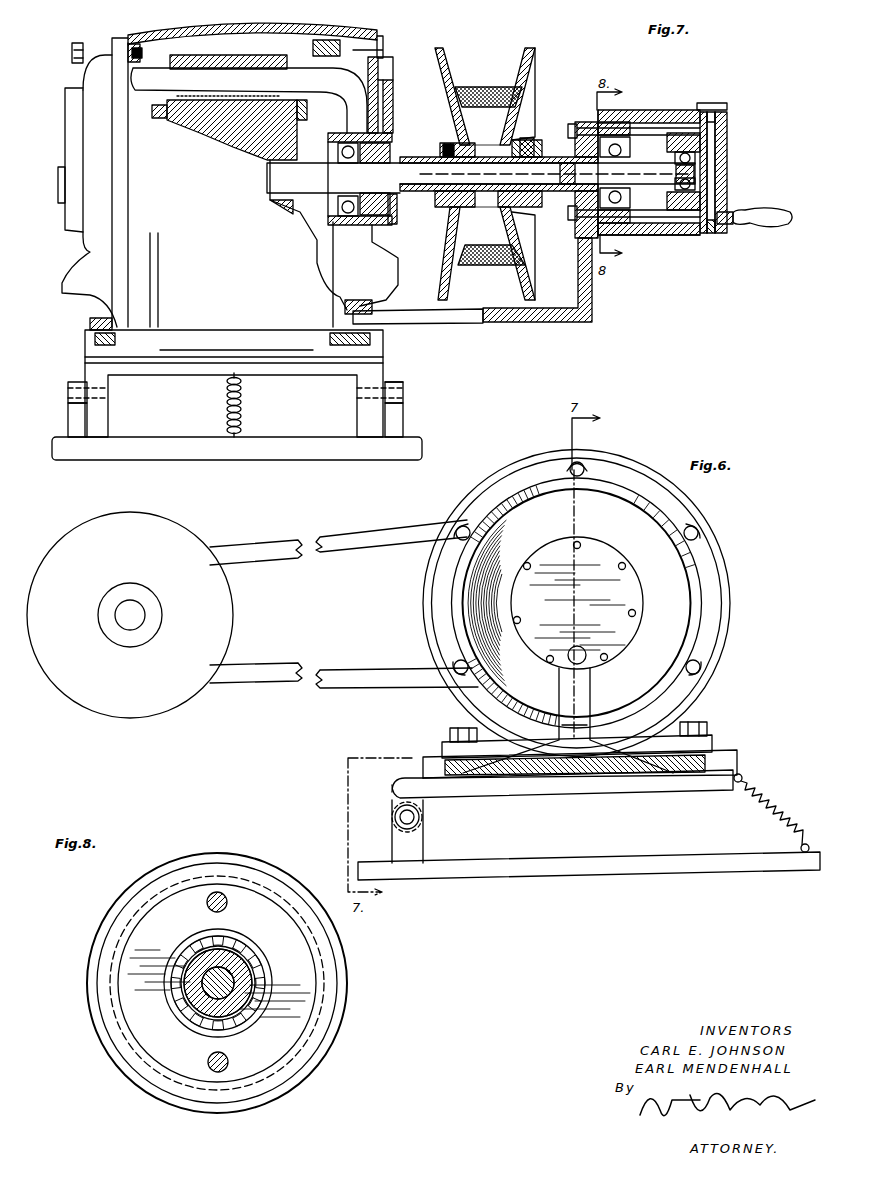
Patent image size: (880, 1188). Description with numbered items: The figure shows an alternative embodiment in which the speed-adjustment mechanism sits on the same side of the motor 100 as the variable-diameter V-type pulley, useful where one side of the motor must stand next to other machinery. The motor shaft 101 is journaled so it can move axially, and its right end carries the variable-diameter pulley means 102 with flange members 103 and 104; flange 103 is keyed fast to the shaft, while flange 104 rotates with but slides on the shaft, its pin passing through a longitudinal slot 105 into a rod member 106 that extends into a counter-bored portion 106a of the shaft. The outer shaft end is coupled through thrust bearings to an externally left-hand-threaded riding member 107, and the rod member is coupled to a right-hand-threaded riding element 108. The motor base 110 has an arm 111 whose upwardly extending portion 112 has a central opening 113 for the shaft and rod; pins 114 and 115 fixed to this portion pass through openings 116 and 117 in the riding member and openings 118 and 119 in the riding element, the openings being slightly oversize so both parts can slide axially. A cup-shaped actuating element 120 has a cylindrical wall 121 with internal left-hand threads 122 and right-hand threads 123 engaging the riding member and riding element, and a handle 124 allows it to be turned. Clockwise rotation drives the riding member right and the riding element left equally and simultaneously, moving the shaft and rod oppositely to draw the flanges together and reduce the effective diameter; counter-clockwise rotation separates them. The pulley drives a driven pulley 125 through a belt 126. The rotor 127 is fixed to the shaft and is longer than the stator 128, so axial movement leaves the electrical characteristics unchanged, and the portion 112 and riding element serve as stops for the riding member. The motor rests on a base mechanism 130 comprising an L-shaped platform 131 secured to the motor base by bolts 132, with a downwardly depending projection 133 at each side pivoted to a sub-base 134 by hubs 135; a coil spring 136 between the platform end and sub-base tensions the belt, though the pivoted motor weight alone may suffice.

In FIG. 7, the motor 100 is at (262, 27).
In FIG. 6, the motor 100 is at (635, 468).
In FIG. 7, the motor shaft 101 is at (287, 180).
In FIG. 7, the variable-diameter pulley means 102 is at (506, 54).
In FIG. 6, the variable-diameter pulley means 102 is at (703, 572).
In FIG. 7, the flange member 103 is at (444, 60).
In FIG. 7, the flange member 104 is at (533, 60).
In FIG. 6, the flange member 104 is at (690, 607).
In FIG. 7, the longitudinal slot 105 is at (537, 140).
In FIG. 7, the rod member 106 is at (452, 207).
In FIG. 8, the rod member 106 is at (180, 1000).
In FIG. 7, the counter-bored portion 106a is at (422, 157).
In FIG. 7, the riding member 107 is at (620, 108).
In FIG. 8, the riding member 107 is at (148, 948).
In FIG. 7, the riding element 108 is at (722, 127).
In FIG. 7, the base 110 is at (85, 350).
In FIG. 6, the base 110 is at (580, 764).
In FIG. 7, the arm 111 is at (508, 324).
In FIG. 6, the arm 111 is at (715, 740).
In FIG. 7, the upwardly extending portion 112 is at (594, 286).
In FIG. 6, the upwardly extending portion 112 is at (594, 690).
In FIG. 7, the central opening 113 is at (580, 190).
In FIG. 7, the pin 114 is at (693, 101).
In FIG. 8, the pin 114 is at (226, 896).
In FIG. 7, the pin 115 is at (676, 223).
In FIG. 8, the pin 115 is at (217, 1072).
In FIG. 7, the opening 116 is at (625, 133).
In FIG. 8, the opening 116 is at (206, 904).
In FIG. 7, the opening 117 is at (628, 226).
In FIG. 8, the opening 117 is at (232, 1058).
In FIG. 7, the opening 118 is at (724, 110).
In FIG. 7, the opening 119 is at (704, 226).
In FIG. 7, the actuating element 120 is at (730, 196).
In FIG. 6, the actuating element 120 is at (622, 640).
In FIG. 7, the cylindrical wall 121 is at (622, 236).
In FIG. 8, the cylindrical wall 121 is at (345, 982).
In FIG. 7, the internal left-hand threads 122 is at (585, 120).
In FIG. 7, the internal right-hand threads 123 is at (672, 125).
In FIG. 7, the handle 124 is at (758, 226).
In FIG. 6, the handle 124 is at (562, 668).
In FIG. 6, the driven pulley 125 is at (122, 699).
In FIG. 7, the belt 126 is at (485, 266).
In FIG. 6, the belt 126 is at (377, 540).
In FIG. 7, the rotor 127 is at (307, 116).
In FIG. 7, the stator 128 is at (283, 55).
In FIG. 7, the base mechanism 130 is at (412, 404).
In FIG. 6, the base mechanism 130 is at (617, 882).
In FIG. 7, the L-shaped platform 131 is at (286, 364).
In FIG. 6, the L-shaped platform 131 is at (637, 786).
In FIG. 7, the bolts 132 is at (90, 325).
In FIG. 6, the bolts 132 is at (463, 729).
In FIG. 7, the downwardly depending projection 133 is at (102, 402).
In FIG. 6, the downwardly depending projection 133 is at (402, 797).
In FIG. 7, the sub-base 134 is at (286, 446).
In FIG. 6, the sub-base 134 is at (718, 866).
In FIG. 7, the hubs 135 is at (405, 378).
In FIG. 6, the hubs 135 is at (421, 819).
In FIG. 7, the coil spring 136 is at (226, 393).
In FIG. 6, the coil spring 136 is at (773, 790).